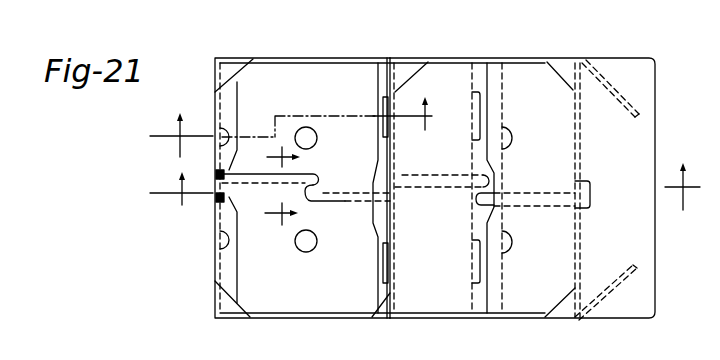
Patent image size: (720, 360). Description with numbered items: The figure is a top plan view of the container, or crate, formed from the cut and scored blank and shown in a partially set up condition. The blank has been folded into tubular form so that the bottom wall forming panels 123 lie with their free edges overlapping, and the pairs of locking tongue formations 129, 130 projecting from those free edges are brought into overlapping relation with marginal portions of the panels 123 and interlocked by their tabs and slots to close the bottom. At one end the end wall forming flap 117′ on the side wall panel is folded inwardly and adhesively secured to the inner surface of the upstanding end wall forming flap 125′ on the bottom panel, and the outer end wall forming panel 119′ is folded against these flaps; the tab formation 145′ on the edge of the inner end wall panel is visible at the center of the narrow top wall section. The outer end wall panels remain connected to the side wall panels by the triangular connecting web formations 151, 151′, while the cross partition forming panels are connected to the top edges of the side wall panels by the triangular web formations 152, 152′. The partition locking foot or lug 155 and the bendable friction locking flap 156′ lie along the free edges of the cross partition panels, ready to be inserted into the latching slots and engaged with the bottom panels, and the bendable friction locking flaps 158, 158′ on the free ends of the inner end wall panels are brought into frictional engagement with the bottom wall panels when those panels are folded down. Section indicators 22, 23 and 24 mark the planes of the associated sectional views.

The section line 22- 22 is at (299, 127).
The section line 23- 23 is at (429, 188).
The section line 24- 24 is at (274, 186).
The end wall forming flap 117′ is at (598, 75).
The outer end wall forming panel 119′ is at (650, 72).
The bottom wall forming panel 123 is at (310, 82).
The end wall forming flap 125′ is at (582, 242).
The locking tongue formation 129 is at (260, 163).
The locking tongue formation 130 is at (333, 199).
The tab formation 145′ is at (590, 195).
The triangular connecting web formation 151 is at (228, 67).
The triangular connecting web formation 151′ is at (565, 70).
The triangular web formation 152 is at (375, 317).
The triangular web formation 152′ is at (417, 57).
The partition locking foot or lug 155 is at (389, 65).
The bendable friction locking flap 156′ is at (477, 70).
The bendable friction locking flap 158 is at (226, 99).
The bendable friction locking flap 158′ is at (495, 72).